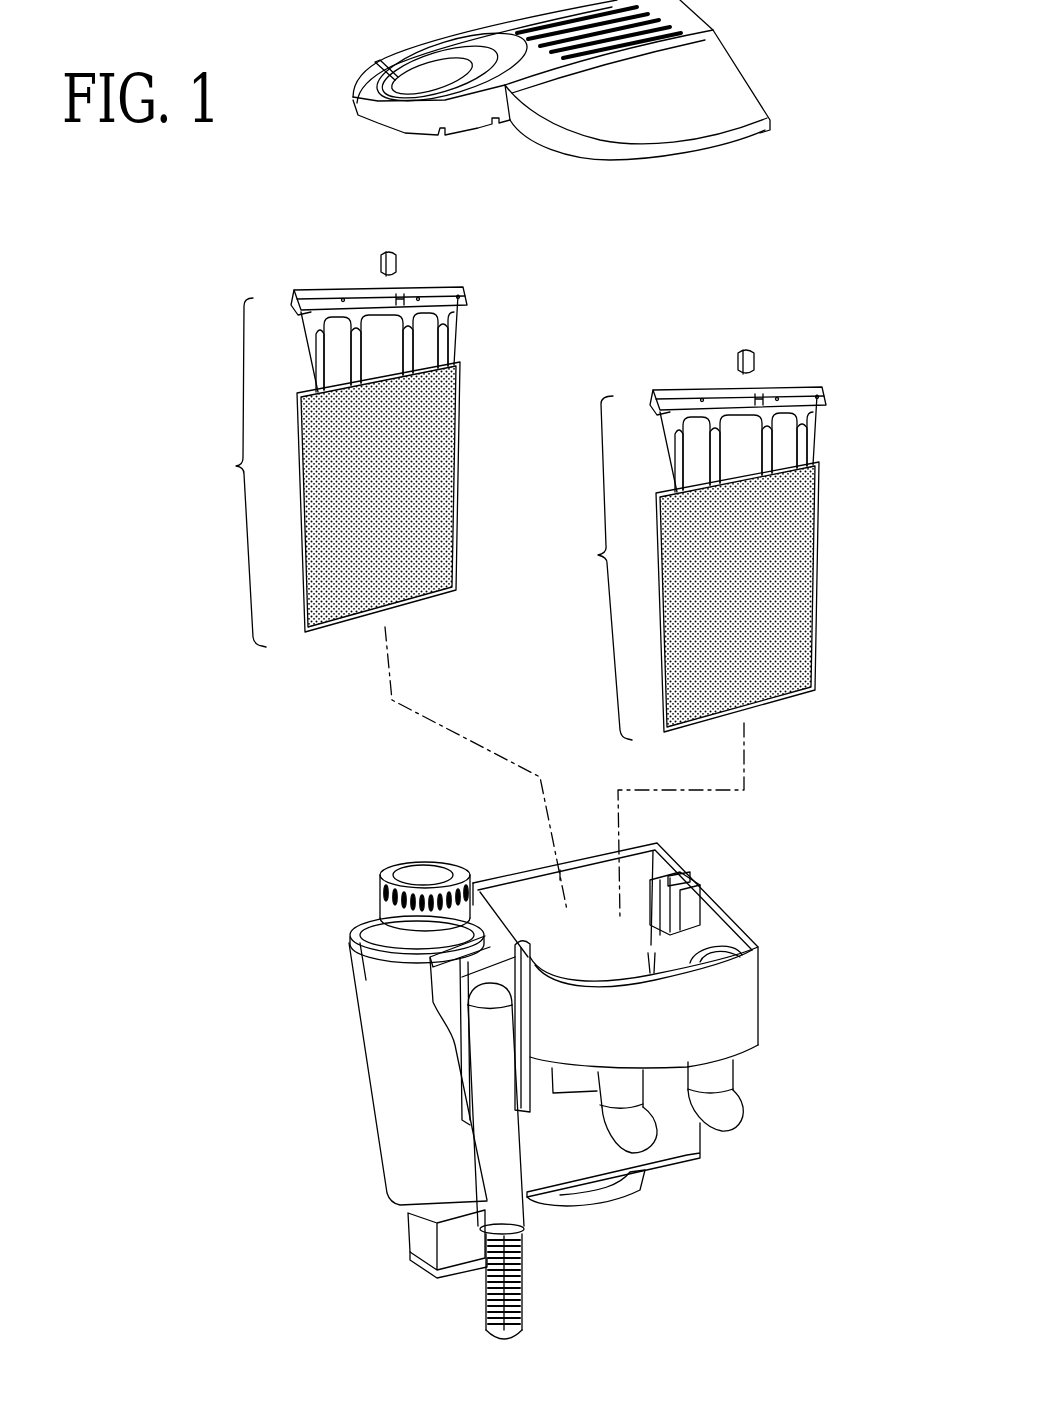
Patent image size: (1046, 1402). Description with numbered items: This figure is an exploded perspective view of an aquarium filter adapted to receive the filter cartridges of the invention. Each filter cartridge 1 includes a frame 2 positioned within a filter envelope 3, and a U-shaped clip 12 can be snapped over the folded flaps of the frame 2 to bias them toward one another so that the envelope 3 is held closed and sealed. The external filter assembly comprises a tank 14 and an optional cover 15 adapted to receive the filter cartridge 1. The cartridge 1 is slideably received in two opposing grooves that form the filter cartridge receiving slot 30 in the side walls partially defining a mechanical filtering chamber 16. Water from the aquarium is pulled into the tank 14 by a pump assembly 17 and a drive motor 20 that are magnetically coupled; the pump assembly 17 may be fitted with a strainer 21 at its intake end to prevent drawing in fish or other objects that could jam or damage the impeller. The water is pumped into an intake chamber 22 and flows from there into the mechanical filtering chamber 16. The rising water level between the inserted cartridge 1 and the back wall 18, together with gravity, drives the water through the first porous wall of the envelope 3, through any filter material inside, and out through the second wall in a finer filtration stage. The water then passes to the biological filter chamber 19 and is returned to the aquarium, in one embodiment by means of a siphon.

The filter cartridge 1 is at (214, 468).
The frame 2 is at (272, 296).
The filter envelope 3 is at (476, 424).
The clip 12 is at (392, 250).
The tank 14 is at (770, 1075).
The cover 15 is at (713, 102).
The mechanical filtering chamber 16 is at (522, 902).
The pump assembly 17 is at (493, 1147).
The back wall 18 is at (573, 867).
The biological filter chamber 19 is at (697, 943).
The drive motor 20 is at (413, 1237).
The strainer 21 is at (527, 1290).
The intake chamber 22 is at (367, 937).
The filter cartridge receiving slot 30 is at (673, 905).